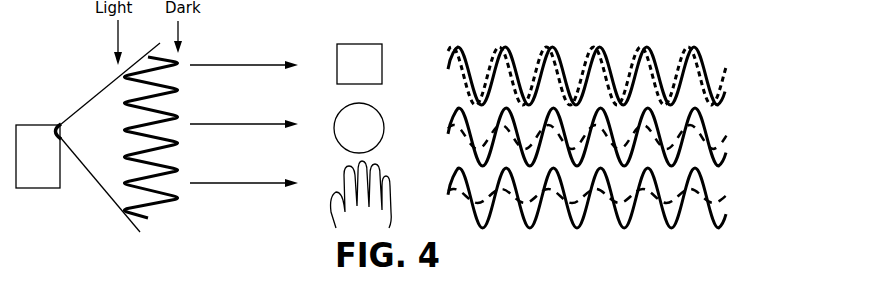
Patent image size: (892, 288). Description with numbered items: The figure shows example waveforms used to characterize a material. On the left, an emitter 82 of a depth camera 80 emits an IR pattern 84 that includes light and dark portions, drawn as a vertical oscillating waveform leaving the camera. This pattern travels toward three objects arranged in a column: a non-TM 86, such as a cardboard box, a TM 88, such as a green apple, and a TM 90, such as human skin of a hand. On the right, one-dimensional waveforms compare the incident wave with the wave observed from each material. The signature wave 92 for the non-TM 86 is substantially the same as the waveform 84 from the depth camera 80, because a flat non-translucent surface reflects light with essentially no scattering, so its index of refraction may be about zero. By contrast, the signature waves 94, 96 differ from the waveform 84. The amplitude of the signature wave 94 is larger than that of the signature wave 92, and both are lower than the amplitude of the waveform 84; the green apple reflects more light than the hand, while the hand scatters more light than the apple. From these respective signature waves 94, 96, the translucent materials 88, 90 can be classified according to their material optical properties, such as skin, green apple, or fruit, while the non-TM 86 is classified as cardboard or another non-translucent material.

The depth camera 80 is at (59, 189).
The emitter 82 is at (58, 124).
The IR pattern 84 is at (160, 207).
The non-TM 86 is at (359, 64).
The TM 88 is at (359, 128).
The TM 90 is at (361, 195).
The signature wave 92 is at (692, 47).
The signature wave 94 is at (700, 121).
The signature wave 96 is at (700, 186).